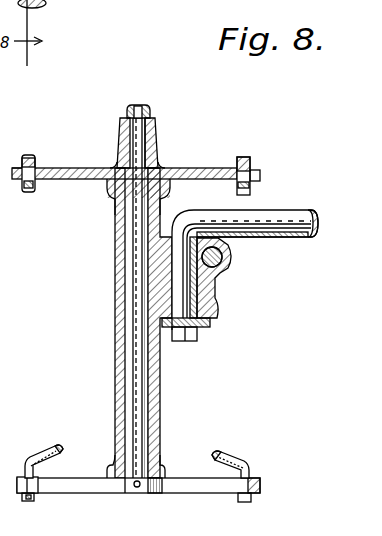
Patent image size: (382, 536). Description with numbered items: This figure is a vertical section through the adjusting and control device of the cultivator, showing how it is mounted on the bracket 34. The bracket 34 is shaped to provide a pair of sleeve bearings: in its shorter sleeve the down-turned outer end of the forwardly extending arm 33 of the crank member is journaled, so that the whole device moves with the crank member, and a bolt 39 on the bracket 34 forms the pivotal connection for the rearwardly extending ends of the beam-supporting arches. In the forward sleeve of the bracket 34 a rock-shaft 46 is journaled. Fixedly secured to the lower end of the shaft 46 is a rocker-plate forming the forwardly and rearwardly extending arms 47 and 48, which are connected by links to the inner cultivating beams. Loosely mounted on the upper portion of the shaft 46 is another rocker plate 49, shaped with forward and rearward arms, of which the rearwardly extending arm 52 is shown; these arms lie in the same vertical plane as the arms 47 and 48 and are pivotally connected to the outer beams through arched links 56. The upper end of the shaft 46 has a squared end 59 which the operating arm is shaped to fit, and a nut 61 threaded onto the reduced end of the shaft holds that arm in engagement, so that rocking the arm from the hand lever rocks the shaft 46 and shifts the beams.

The forwardly extending arm 33 is at (276, 209).
The bracket 34 is at (117, 312).
The bolt 39 is at (222, 262).
The rock-shaft 46 is at (136, 385).
The forwardly extending arm 47 is at (82, 487).
The rearwardly extending arm 48 is at (226, 523).
The rocker plate 49 is at (88, 168).
The rearwardly extending arm 52 is at (82, 164).
The arched link 56 is at (23, 156).
The squared end 59 is at (136, 151).
The nut 61 is at (153, 99).